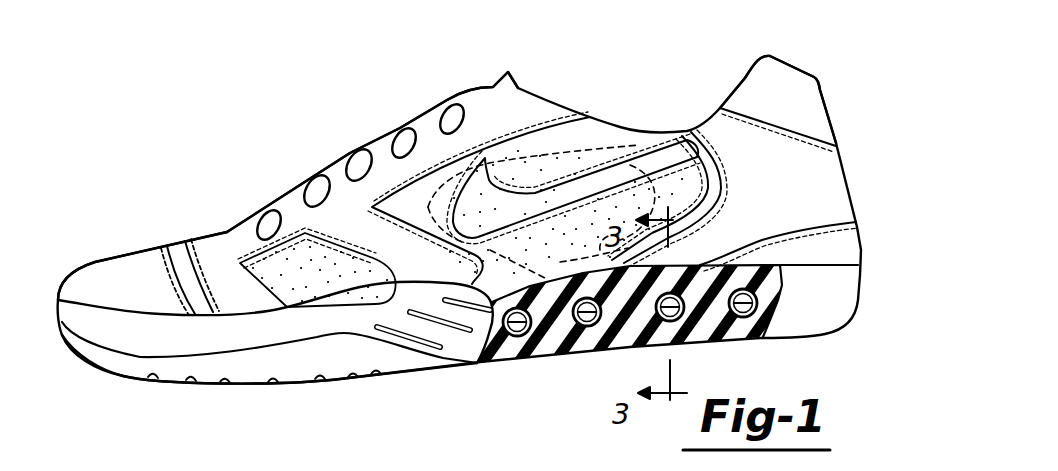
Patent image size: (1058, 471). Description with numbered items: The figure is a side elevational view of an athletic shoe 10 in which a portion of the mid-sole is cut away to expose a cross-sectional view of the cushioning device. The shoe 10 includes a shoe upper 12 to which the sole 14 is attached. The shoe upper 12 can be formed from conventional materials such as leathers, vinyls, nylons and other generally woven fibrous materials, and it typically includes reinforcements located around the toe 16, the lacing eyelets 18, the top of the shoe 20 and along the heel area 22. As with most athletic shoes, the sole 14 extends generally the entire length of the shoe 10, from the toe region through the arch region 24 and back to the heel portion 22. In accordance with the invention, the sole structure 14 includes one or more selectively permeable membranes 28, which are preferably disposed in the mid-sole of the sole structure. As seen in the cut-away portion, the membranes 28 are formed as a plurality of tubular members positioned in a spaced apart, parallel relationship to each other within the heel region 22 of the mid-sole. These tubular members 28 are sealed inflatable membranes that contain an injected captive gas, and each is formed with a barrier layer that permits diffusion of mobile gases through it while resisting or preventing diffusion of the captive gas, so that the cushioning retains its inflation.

The athletic shoe 10 is at (292, 158).
The shoe upper 12 is at (237, 233).
The sole 14 is at (248, 362).
The toe 16 is at (117, 280).
The lacing eyelets 18 is at (477, 110).
The top of the shoe 20 is at (785, 106).
The heel area 22 is at (850, 256).
The arch region 24 is at (463, 340).
The selectively permeable membranes 28 is at (760, 340).